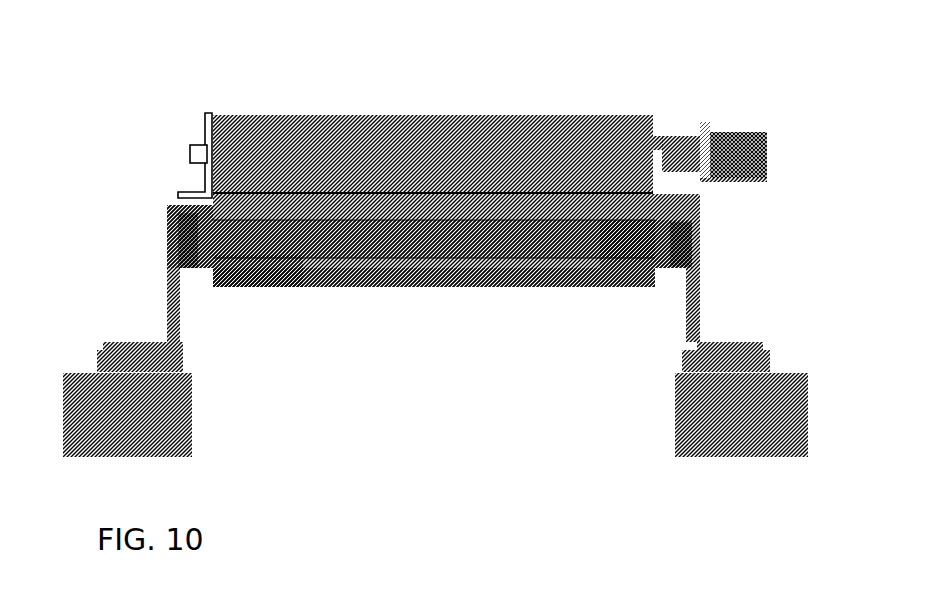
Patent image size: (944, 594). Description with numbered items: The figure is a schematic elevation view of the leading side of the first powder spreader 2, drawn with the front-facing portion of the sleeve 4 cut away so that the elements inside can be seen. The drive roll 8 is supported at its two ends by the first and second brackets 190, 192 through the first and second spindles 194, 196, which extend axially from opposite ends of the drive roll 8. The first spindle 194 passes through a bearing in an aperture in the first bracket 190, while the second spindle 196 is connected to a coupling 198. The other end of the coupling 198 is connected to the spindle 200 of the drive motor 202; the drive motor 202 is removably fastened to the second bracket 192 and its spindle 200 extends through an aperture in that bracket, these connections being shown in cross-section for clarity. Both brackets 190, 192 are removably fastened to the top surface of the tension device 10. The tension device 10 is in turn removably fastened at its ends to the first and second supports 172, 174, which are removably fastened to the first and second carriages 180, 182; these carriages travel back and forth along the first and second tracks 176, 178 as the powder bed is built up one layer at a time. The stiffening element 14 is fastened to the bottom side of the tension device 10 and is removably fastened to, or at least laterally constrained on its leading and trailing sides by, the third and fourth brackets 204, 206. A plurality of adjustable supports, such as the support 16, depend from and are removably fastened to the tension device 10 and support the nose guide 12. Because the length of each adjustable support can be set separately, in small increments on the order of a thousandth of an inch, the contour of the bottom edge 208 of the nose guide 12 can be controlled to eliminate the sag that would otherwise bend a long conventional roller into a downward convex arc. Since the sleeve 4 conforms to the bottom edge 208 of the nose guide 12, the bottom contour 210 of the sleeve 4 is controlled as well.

The first powder spreader 2 is at (484, 90).
The sleeve 4 is at (231, 197).
The drive roll 8 is at (277, 122).
The tension device 10 is at (182, 205).
The nose guide 12 is at (495, 285).
The stiffening element 14 is at (666, 262).
The support 16 is at (236, 257).
The first support 172 is at (168, 312).
The second support 174 is at (697, 318).
The first track 176 is at (192, 413).
The second track 178 is at (675, 403).
The first carriage 180 is at (182, 360).
The second carriage 182 is at (682, 358).
The first bracket 190 is at (206, 122).
The first spindle 194 is at (195, 148).
The second bracket 192 is at (703, 124).
The second spindle 196 is at (655, 148).
The coupling 198 is at (669, 135).
The spindle 200 is at (696, 158).
The drive motor 202 is at (757, 178).
The third bracket 204 is at (185, 250).
The fourth bracket 206 is at (683, 253).
The bottom edge 208 is at (370, 283).
The bottom contour 210 is at (427, 285).